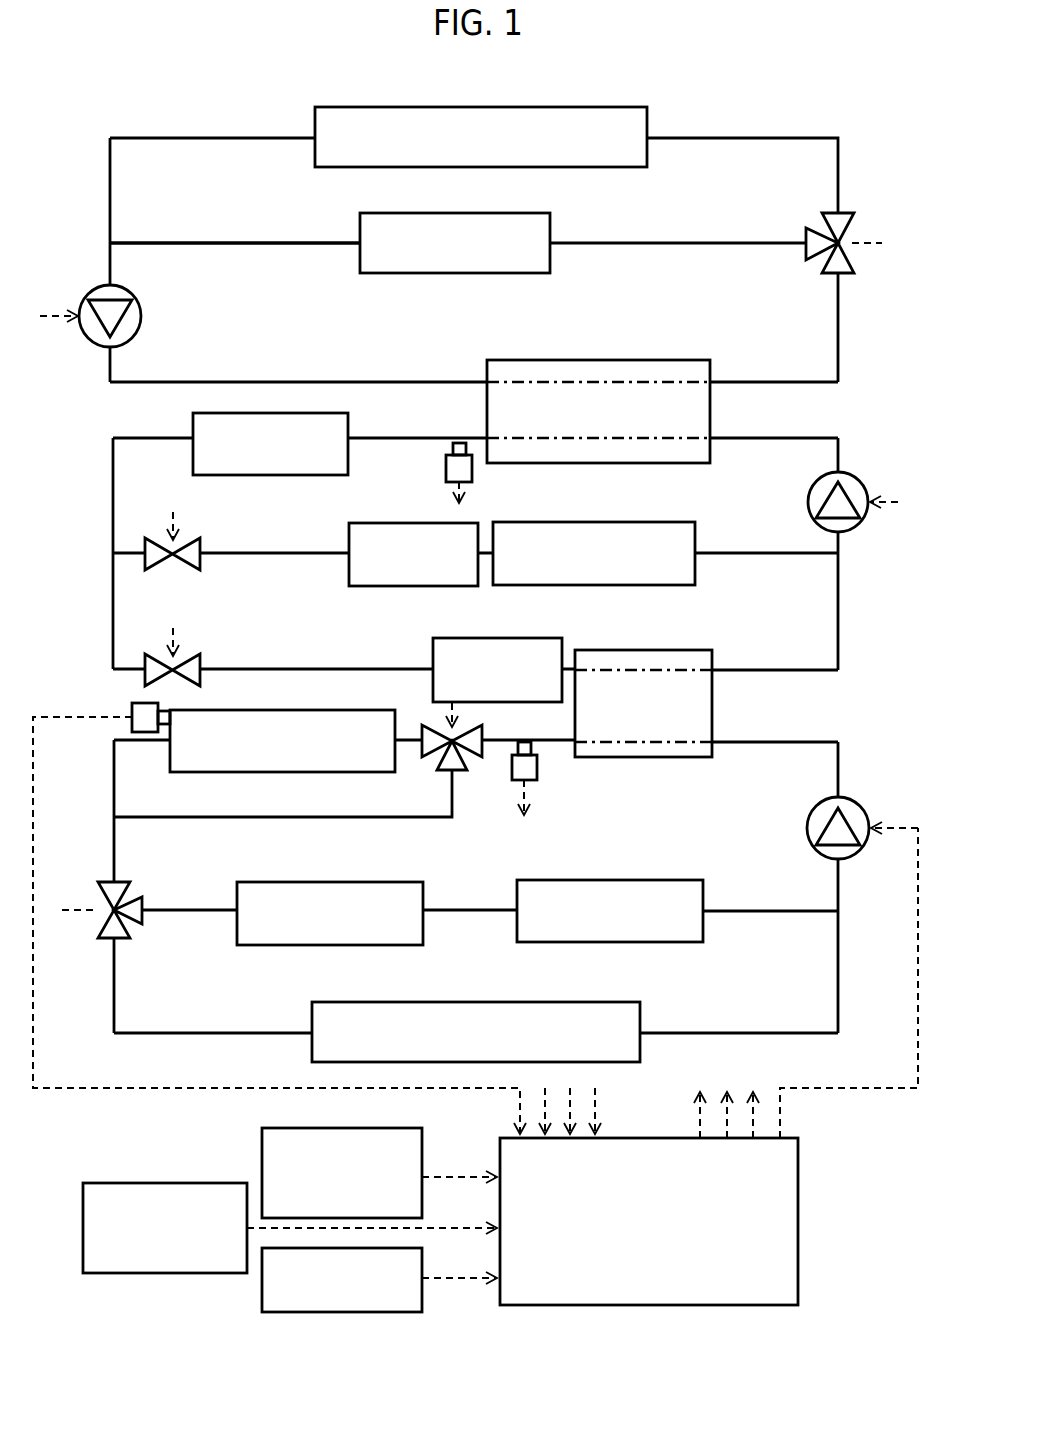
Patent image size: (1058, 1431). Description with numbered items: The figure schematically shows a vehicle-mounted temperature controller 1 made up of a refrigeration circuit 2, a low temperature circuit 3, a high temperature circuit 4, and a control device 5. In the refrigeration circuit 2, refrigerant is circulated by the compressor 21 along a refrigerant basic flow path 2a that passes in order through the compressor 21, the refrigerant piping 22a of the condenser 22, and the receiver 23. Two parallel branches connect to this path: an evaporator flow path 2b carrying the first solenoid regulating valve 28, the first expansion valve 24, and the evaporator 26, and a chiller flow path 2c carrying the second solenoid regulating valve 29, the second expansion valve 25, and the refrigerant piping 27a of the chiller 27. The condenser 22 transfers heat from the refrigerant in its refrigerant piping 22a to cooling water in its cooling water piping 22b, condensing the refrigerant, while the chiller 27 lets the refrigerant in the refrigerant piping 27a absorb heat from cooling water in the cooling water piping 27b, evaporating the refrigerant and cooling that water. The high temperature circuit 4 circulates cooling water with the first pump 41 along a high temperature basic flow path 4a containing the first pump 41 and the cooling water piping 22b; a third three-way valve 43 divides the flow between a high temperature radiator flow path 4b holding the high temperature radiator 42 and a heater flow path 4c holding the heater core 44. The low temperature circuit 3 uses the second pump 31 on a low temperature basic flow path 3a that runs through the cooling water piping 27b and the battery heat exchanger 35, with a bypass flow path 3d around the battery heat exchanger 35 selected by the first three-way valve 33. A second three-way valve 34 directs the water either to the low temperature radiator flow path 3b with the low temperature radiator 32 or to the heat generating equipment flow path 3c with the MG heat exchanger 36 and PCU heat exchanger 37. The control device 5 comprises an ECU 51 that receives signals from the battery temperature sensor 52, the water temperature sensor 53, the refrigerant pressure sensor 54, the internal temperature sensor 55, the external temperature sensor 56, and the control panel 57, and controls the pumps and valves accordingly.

The vehicle-mounted temperature controller 1 is at (829, 113).
The refrigeration circuit 2 is at (860, 440).
The refrigerant basic flow path 2a is at (740, 438).
The evaporator flow path 2b is at (712, 553).
The chiller flow path 2c is at (735, 670).
The low temperature circuit 3 is at (860, 778).
The low temperature basic flow path 3a is at (745, 742).
The low temperature radiator flow path 3b is at (730, 1033).
The heat generating equipment flow path 3c is at (730, 912).
The bypass flow path 3d is at (325, 818).
The high temperature circuit 4 is at (860, 177).
The high temperature basic flow path 4a is at (742, 382).
The high temperature radiator flow path 4b is at (703, 138).
The heater flow path 4c is at (133, 243).
The control device 5 is at (860, 1155).
The compressor 21 is at (808, 505).
The condenser 22 is at (545, 465).
The refrigerant piping of the condenser 22a is at (658, 445).
The cooling water piping of the condenser 22b is at (622, 381).
The receiver 23 is at (348, 460).
The first expansion valve 24 is at (358, 586).
The second expansion valve 25 is at (465, 638).
The evaporator 26 is at (520, 585).
The chiller 27 is at (693, 650).
The refrigerant piping of the chiller 27a is at (625, 670).
The cooling water piping of the chiller 27b is at (640, 745).
The first solenoid regulating valve 28 is at (200, 545).
The second solenoid regulating valve 29 is at (200, 661).
The second pump 31 is at (808, 828).
The low temperature radiator 32 is at (432, 1002).
The first three-way valve 33 is at (455, 772).
The second three-way valve 34 is at (120, 882).
The battery heat exchanger 35 is at (328, 773).
The MG heat exchanger 36 is at (390, 882).
The PCU heat exchanger 37 is at (652, 880).
The first pump 41 is at (93, 340).
The high temperature radiator 42 is at (466, 107).
The third three-way valve 43 is at (822, 213).
The heater core 44 is at (425, 273).
The electronic control unit (ECU) 51 is at (498, 1150).
The battery temperature sensor 52 is at (130, 705).
The water temperature sensor 53 is at (537, 768).
The refrigerant pressure sensor 54 is at (472, 468).
The internal temperature sensor 55 is at (262, 1160).
The external temperature sensor 56 is at (83, 1248).
The control panel 57 is at (262, 1296).